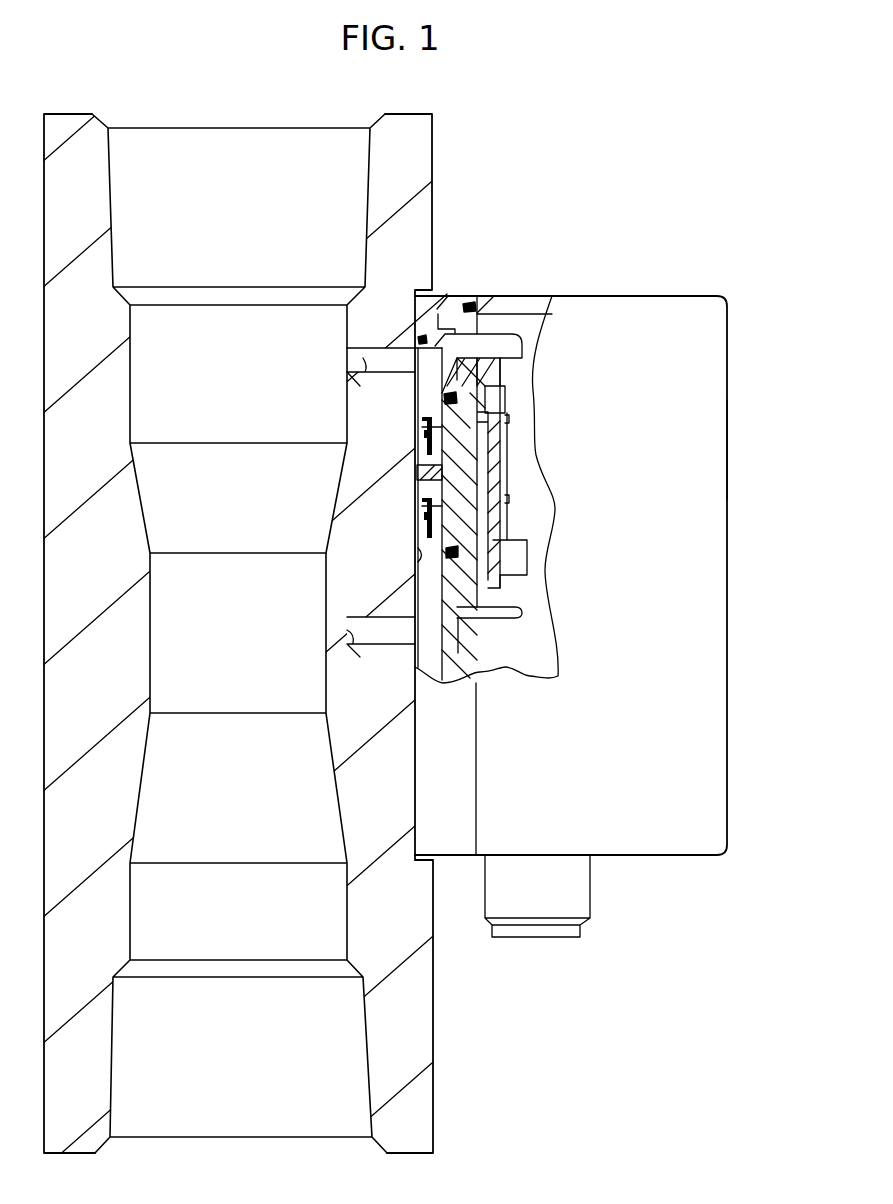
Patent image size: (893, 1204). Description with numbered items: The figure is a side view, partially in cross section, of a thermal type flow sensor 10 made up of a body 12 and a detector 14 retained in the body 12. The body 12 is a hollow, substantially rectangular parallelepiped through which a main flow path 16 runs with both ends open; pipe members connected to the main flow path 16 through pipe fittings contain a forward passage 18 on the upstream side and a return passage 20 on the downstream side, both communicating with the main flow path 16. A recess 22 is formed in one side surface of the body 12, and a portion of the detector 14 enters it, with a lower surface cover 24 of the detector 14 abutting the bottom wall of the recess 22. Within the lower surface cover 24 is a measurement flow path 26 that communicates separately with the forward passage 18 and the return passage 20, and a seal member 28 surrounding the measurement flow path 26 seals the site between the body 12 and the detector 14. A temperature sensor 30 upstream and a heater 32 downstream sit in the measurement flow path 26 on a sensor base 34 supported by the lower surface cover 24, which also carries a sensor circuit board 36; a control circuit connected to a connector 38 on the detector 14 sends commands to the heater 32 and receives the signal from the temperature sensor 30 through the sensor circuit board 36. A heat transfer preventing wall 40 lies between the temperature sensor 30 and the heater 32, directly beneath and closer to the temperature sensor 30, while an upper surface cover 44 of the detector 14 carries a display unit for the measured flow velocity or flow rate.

The thermal type flow sensor 10 is at (562, 99).
The body 12 is at (417, 170).
The detector 14 is at (600, 585).
The main flow path 16 is at (130, 370).
The forward passage 18 is at (362, 360).
The return passage 20 is at (350, 630).
The recess 22 is at (422, 853).
The lower surface cover 24 is at (457, 738).
The measurement flow path 26 is at (418, 560).
The seal member 28 is at (417, 338).
The temperature sensor 30 is at (425, 432).
The heater 32 is at (425, 520).
The sensor base 34 is at (493, 382).
The sensor circuit board 36 is at (495, 453).
The connector 38 is at (568, 892).
The heat transfer preventing wall 40 is at (417, 470).
The upper surface cover 44 is at (708, 455).